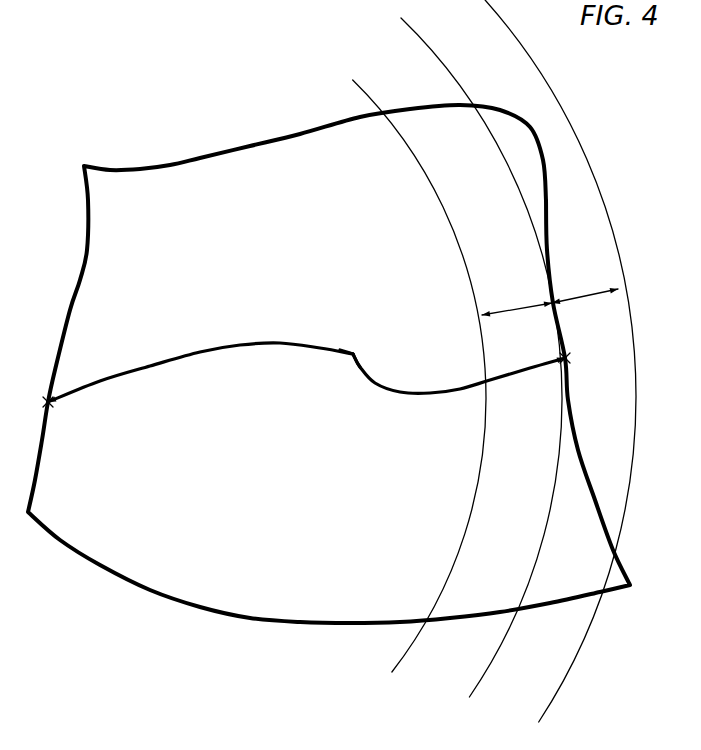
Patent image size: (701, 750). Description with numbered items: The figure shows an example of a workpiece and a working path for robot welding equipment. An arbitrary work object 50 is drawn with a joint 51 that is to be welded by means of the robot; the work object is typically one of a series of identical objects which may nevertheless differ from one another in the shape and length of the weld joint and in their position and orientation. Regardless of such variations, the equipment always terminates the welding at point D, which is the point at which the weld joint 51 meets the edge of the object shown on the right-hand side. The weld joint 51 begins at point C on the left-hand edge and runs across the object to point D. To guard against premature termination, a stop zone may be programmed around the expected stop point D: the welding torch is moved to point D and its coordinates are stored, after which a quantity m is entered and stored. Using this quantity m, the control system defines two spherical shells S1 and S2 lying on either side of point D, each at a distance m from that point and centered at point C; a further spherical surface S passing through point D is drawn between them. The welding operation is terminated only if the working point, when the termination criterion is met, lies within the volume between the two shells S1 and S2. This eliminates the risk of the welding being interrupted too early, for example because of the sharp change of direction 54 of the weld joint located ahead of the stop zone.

The work object 50 is at (216, 585).
The joint 51 is at (213, 352).
The sharp change of direction 54 is at (354, 352).
The point C is at (51, 408).
The point D is at (562, 362).
The sectional curve S is at (481, 370).
The spherical shell S1 is at (419, 390).
The spherical shell S2 is at (560, 375).
The quantity m is at (550, 294).